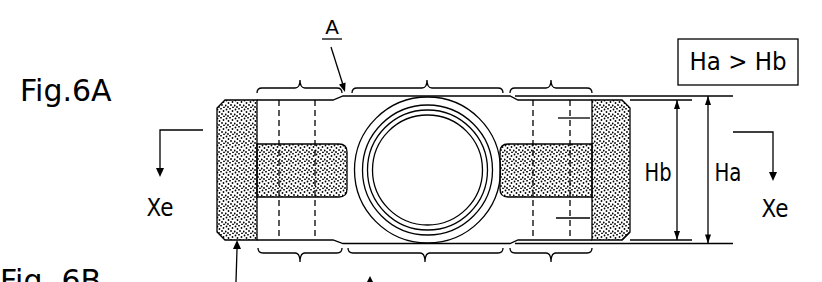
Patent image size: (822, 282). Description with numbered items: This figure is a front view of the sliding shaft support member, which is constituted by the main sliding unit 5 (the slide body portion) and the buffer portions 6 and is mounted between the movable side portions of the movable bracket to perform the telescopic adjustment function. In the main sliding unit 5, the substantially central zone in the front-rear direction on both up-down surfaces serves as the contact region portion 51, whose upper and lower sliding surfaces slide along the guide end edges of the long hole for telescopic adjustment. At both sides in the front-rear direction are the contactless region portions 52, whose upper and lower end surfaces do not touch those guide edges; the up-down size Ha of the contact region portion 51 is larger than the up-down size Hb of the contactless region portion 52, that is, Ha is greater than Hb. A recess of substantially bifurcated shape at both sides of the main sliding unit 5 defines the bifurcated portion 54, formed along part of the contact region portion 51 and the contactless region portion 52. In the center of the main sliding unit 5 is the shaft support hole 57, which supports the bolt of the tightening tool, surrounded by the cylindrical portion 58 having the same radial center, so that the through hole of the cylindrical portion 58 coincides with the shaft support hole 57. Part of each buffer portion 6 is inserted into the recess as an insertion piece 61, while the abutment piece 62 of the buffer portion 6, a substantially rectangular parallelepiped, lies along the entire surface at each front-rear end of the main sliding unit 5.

The main sliding unit 5 is at (506, 80).
The buffer portion 6 is at (621, 241).
The contact region portion 51 is at (425, 167).
The contactless region portion 52 is at (435, 167).
The bifurcated portion 54 is at (597, 110).
The shaft support hole 57 is at (440, 185).
The cylindrical portion 58 is at (368, 123).
The insertion piece 61 is at (303, 183).
The abutment piece 62 is at (217, 124).